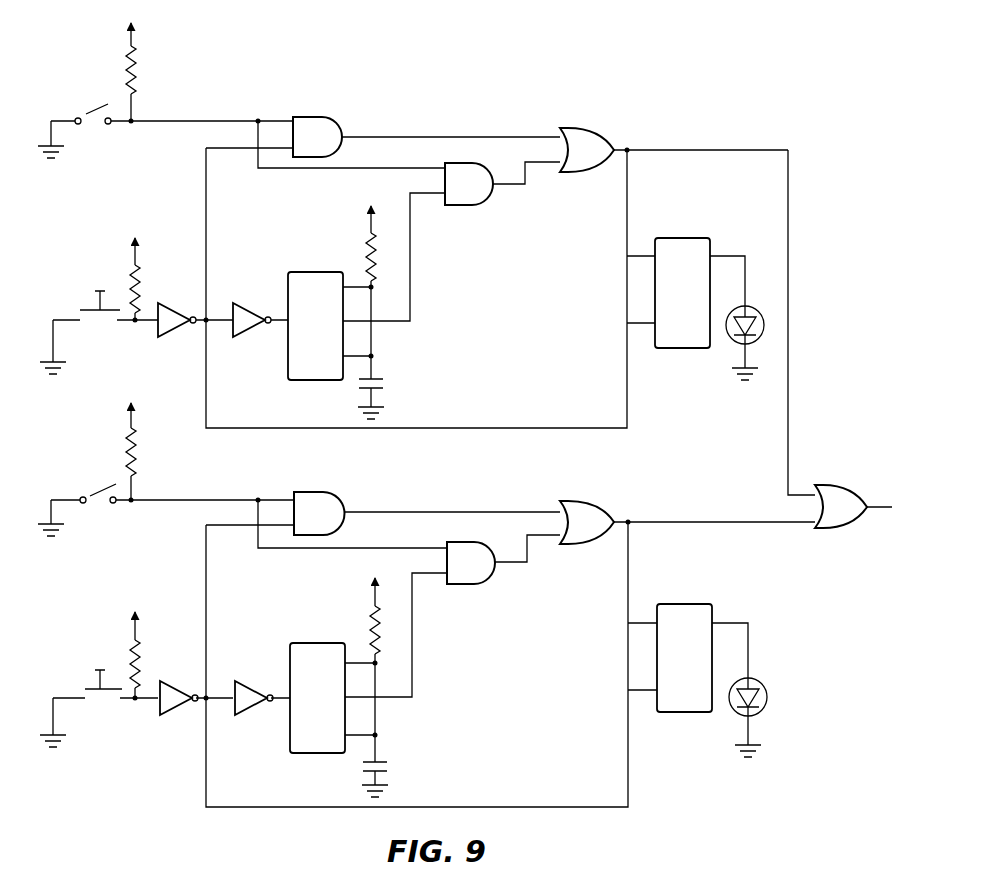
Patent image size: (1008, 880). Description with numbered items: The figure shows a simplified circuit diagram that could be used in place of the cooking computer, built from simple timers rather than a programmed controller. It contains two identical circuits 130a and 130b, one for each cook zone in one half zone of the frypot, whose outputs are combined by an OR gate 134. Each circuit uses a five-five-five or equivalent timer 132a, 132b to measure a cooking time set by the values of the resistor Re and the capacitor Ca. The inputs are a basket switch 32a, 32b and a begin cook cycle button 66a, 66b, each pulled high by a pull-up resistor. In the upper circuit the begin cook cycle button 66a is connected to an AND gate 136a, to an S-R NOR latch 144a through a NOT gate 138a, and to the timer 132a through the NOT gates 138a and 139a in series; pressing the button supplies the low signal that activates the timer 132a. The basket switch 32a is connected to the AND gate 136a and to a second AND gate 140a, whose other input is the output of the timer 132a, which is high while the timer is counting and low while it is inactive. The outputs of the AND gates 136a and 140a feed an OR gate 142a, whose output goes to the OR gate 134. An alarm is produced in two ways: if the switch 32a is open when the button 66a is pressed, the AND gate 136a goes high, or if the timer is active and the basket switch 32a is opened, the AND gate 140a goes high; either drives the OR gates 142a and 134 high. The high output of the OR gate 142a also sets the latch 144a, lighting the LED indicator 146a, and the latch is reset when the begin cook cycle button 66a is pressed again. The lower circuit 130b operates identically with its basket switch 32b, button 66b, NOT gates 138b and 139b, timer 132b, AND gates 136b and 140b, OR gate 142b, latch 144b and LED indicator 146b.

The circuit 130a is at (696, 100).
The circuit 130b is at (252, 435).
The basket switch 32a is at (98, 97).
The basket switch 32b is at (84, 487).
The begin cook cycle button 66a is at (90, 296).
The begin cook cycle button 66b is at (87, 686).
The timer 132a is at (304, 269).
The timer 132b is at (326, 670).
The AND gate 136a is at (338, 115).
The AND gate 136b is at (347, 496).
The NOT gate 138a is at (181, 338).
The NOT gate 138b is at (165, 720).
The NOT gate 139a is at (250, 301).
The NOT gate 139b is at (263, 673).
The AND gate 140a is at (491, 201).
The AND gate 140b is at (502, 579).
The OR gate 142a is at (591, 126).
The OR gate 142b is at (620, 508).
The S-R NOR latch 144a is at (686, 235).
The S-R NOR latch 144b is at (704, 637).
The LED indicator 146a is at (771, 310).
The LED indicator 146b is at (781, 702).
The OR gate 134 is at (831, 482).